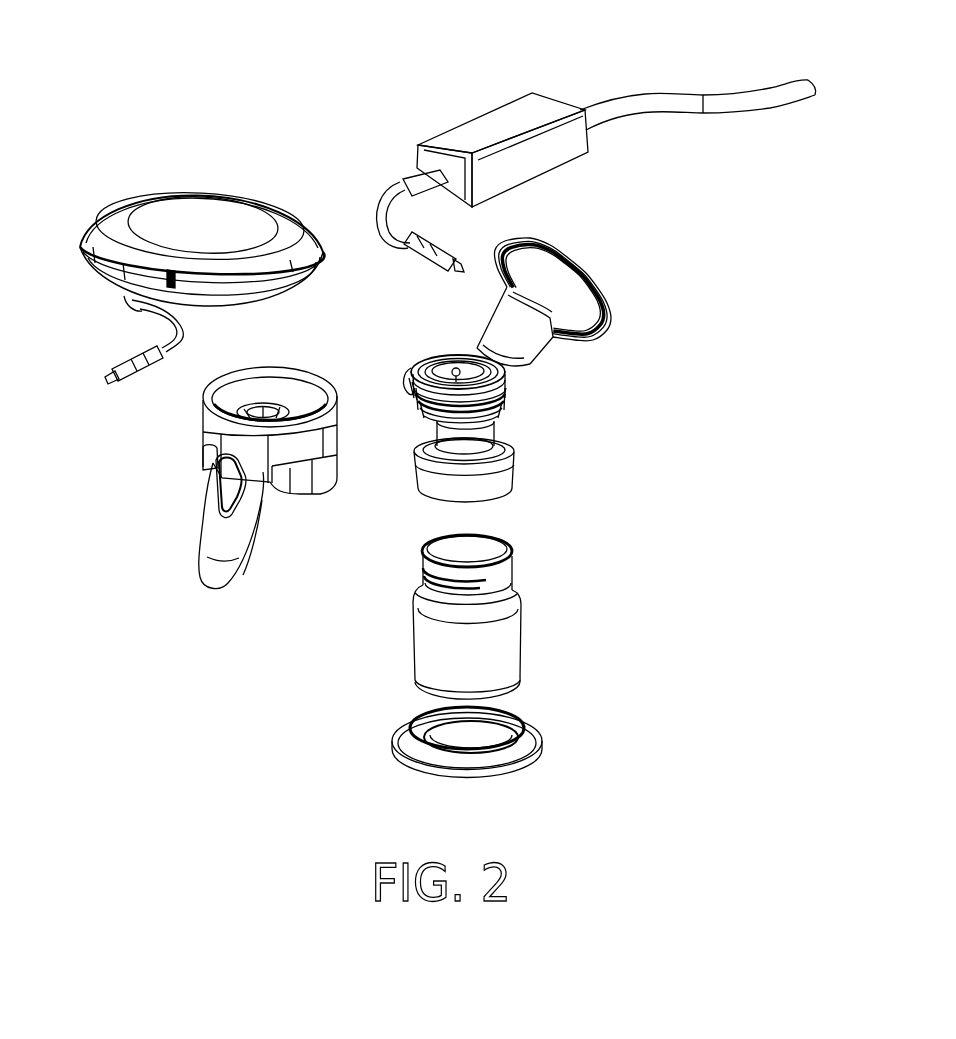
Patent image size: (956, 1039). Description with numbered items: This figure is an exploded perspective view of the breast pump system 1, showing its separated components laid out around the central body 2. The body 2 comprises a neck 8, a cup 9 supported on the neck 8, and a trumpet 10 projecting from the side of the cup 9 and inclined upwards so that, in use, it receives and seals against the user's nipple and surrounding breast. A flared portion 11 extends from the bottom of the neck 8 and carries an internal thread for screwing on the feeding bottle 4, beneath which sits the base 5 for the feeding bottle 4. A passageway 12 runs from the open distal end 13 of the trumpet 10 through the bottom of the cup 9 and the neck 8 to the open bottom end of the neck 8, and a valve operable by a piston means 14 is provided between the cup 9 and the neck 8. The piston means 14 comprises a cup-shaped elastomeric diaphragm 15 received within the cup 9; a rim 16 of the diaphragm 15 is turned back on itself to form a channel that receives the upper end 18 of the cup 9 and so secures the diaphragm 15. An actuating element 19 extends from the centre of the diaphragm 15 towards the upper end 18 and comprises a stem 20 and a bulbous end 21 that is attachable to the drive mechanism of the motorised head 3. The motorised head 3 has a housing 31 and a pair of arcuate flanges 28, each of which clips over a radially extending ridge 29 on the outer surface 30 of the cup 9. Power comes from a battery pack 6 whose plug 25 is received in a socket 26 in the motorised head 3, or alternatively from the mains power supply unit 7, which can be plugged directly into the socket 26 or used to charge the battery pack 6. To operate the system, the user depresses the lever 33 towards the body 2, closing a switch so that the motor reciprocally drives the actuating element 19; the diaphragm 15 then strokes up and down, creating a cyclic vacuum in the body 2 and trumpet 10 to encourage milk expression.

The breast pump system 1 is at (104, 86).
The body 2 is at (460, 433).
The motorised head 3 is at (313, 377).
The feeding bottle 4 is at (520, 635).
The base 5 is at (543, 742).
The battery pack 6 is at (205, 210).
The mains power supply unit 7 is at (482, 130).
The neck 8 is at (497, 437).
The cup 9 is at (493, 390).
The trumpet 10 is at (567, 298).
The flared portion 11 is at (517, 467).
The passageway 12 is at (525, 328).
The distal end 13 is at (575, 262).
The piston means 14 is at (470, 356).
The diaphragm 15 is at (510, 367).
The rim 16 is at (408, 377).
The upper end 18 is at (447, 360).
The actuating element 19 is at (456, 367).
The stem 20 is at (427, 367).
The bulbous end 21 is at (440, 360).
The plug 25 is at (170, 338).
The socket 26 is at (267, 403).
The arcuate flanges 28 is at (317, 477).
The radially extending ridge 29 is at (497, 407).
The outer surface 30 is at (463, 400).
The housing 31 is at (283, 372).
The lever 33 is at (209, 557).